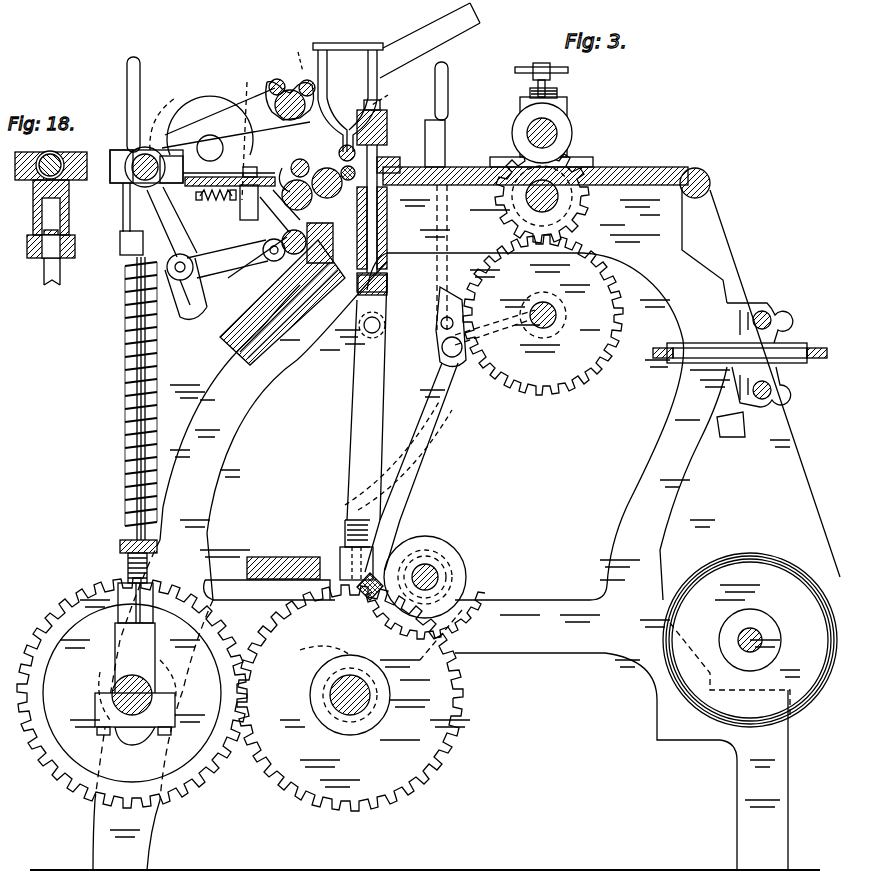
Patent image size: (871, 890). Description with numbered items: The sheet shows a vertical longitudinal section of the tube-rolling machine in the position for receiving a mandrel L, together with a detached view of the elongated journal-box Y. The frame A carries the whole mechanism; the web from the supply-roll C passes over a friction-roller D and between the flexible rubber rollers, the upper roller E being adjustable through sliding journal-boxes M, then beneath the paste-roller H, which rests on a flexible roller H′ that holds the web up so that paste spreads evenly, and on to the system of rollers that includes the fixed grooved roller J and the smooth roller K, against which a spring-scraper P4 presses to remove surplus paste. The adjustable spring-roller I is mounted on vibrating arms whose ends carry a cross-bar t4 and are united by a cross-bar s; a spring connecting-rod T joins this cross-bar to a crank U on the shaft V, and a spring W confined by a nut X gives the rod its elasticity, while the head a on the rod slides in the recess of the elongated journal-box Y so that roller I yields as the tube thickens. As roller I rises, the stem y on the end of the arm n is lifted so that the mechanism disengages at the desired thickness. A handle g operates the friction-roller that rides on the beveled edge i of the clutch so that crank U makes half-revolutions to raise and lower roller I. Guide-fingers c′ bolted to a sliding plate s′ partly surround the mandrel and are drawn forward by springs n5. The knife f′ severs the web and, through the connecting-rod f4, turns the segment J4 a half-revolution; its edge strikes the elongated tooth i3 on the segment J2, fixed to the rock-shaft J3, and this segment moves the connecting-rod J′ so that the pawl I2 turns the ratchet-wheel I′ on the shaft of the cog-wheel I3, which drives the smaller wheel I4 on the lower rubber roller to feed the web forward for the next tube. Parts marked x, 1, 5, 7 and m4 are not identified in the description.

In FIG. 18, the elongated journal-box Y is at (51, 193).
In FIG. 18, the slot x is at (51, 216).
In FIG. 18, the head a is at (51, 236).
In FIG. 3, the head a is at (372, 48).
In FIG. 18, the nut X is at (27, 248).
In FIG. 3, the nut X is at (131, 243).
In FIG. 3, the frame A is at (435, 518).
In FIG. 3, the spring-scraper P4 is at (390, 210).
In FIG. 3, the flexible roller H′ is at (388, 152).
In FIG. 3, the arm n is at (430, 40).
In FIG. 3, the post m4 is at (450, 196).
In FIG. 3, the knife f′ is at (384, 90).
In FIG. 3, the paste-roller H is at (342, 153).
In FIG. 3, the smooth roller K is at (338, 192).
In FIG. 3, the mandrel L is at (380, 735).
In FIG. 3, the guide-fingers c′ is at (282, 172).
In FIG. 3, the roller J is at (294, 235).
In FIG. 3, the stop 5 is at (325, 114).
In FIG. 3, the stop 7 is at (315, 126).
In FIG. 3, the adjustable spring-roller I is at (288, 100).
In FIG. 3, the cross-bar t4 is at (292, 52).
In FIG. 3, the cross-bar s is at (201, 126).
In FIG. 3, the sliding plate s′ is at (241, 133).
In FIG. 3, the handle g is at (122, 104).
In FIG. 3, the stem y is at (146, 189).
In FIG. 3, the friction-roller D is at (435, 240).
In FIG. 3, the shaft V is at (197, 467).
In FIG. 3, the block 1 is at (249, 202).
In FIG. 3, the springs n5 is at (216, 204).
In FIG. 3, the spring W is at (149, 394).
In FIG. 3, the spring connecting-rod T is at (122, 394).
In FIG. 3, the crank U is at (132, 693).
In FIG. 3, the sliding journal-boxes M is at (404, 437).
In FIG. 3, the beveled edge i is at (337, 695).
In FIG. 3, the segment J4 is at (325, 652).
In FIG. 3, the rock-shaft J3 is at (455, 550).
In FIG. 3, the segment J2 is at (425, 626).
In FIG. 3, the connecting-rod f4 is at (366, 410).
In FIG. 3, the elongated tooth i3 is at (330, 560).
In FIG. 3, the connecting-rod J′ is at (401, 467).
In FIG. 3, the pawl I2 is at (451, 317).
In FIG. 3, the ratchet-wheel I′ is at (595, 380).
In FIG. 3, the cog-wheel I3 is at (568, 320).
In FIG. 3, the smaller wheel I4 is at (575, 205).
In FIG. 3, the flexible roller E is at (565, 137).
In FIG. 3, the supply-roll C is at (750, 640).